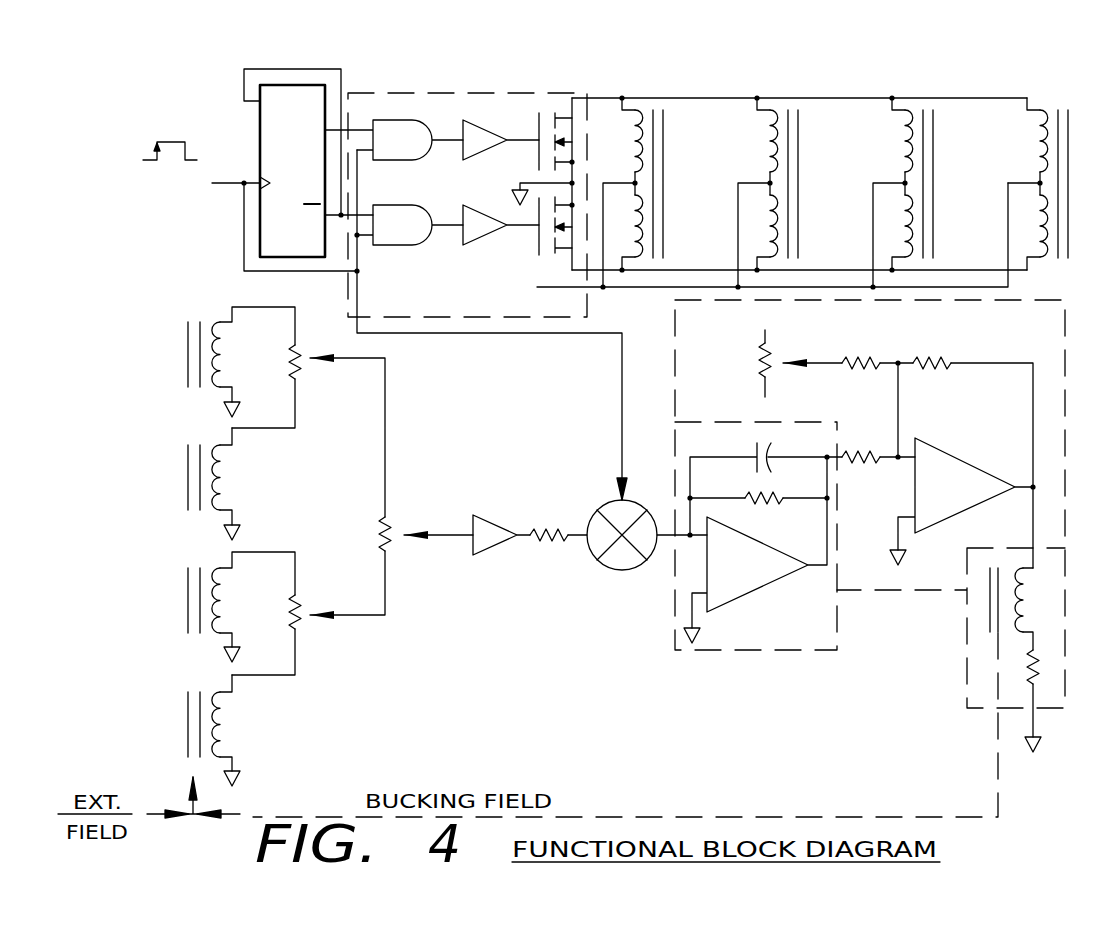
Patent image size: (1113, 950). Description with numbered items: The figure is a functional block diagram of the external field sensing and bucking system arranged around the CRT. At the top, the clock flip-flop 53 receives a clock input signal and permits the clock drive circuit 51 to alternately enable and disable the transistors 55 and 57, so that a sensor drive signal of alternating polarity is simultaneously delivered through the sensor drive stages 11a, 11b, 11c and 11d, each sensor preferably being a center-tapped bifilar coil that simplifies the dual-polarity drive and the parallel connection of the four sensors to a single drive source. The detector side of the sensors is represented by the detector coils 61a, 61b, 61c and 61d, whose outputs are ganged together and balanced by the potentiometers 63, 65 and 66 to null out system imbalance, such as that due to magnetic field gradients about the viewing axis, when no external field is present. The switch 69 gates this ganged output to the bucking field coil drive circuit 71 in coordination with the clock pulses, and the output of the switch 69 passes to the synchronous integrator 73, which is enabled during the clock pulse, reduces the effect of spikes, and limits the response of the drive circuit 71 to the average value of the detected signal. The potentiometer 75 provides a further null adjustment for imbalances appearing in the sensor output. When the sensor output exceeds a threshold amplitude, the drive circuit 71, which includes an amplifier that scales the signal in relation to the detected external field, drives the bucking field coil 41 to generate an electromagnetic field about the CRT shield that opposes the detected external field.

The sensor #1 drive transformer 11a is at (627, 155).
The sensor #2 drive transformer 11b is at (762, 155).
The sensor #3 drive transformer 11c is at (895, 155).
The sensor #4 drive transformer 11d is at (1030, 145).
The bucking field coil 41 is at (963, 618).
The clock drive circuit 51 is at (473, 93).
The clock flip-flop 53 is at (260, 157).
The transistor 55 is at (539, 150).
The transistor 57 is at (539, 232).
The detector coil 61a is at (171, 362).
The detector coil 61b is at (143, 484).
The detector coil 61c is at (171, 607).
The detector coil 61d is at (143, 730).
The potentiometer 63 is at (303, 372).
The potentiometer 65 is at (308, 600).
The potentiometer 66 is at (396, 518).
The switch 69 is at (643, 563).
The bucking field coil drive circuit 71 is at (675, 357).
The synchronous integrator 73 is at (650, 652).
The potentiometer 75 is at (771, 378).